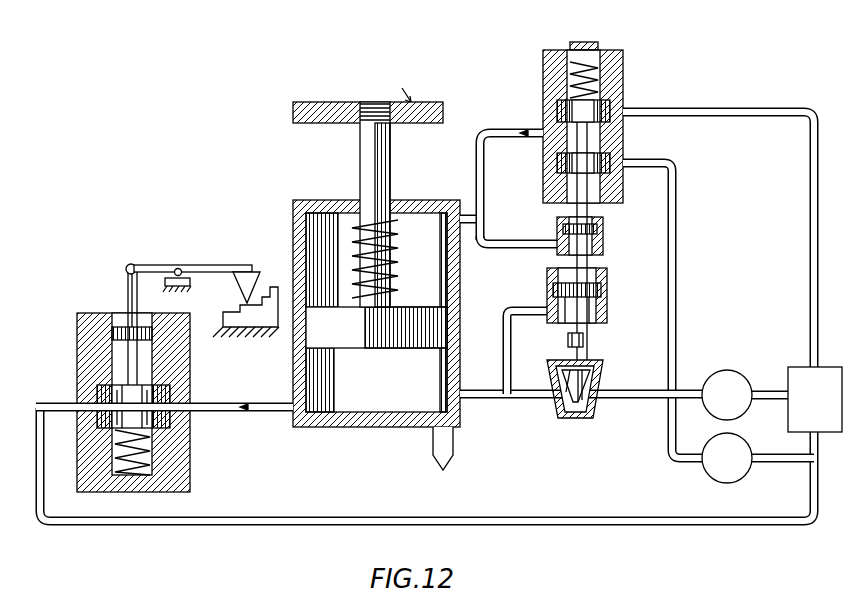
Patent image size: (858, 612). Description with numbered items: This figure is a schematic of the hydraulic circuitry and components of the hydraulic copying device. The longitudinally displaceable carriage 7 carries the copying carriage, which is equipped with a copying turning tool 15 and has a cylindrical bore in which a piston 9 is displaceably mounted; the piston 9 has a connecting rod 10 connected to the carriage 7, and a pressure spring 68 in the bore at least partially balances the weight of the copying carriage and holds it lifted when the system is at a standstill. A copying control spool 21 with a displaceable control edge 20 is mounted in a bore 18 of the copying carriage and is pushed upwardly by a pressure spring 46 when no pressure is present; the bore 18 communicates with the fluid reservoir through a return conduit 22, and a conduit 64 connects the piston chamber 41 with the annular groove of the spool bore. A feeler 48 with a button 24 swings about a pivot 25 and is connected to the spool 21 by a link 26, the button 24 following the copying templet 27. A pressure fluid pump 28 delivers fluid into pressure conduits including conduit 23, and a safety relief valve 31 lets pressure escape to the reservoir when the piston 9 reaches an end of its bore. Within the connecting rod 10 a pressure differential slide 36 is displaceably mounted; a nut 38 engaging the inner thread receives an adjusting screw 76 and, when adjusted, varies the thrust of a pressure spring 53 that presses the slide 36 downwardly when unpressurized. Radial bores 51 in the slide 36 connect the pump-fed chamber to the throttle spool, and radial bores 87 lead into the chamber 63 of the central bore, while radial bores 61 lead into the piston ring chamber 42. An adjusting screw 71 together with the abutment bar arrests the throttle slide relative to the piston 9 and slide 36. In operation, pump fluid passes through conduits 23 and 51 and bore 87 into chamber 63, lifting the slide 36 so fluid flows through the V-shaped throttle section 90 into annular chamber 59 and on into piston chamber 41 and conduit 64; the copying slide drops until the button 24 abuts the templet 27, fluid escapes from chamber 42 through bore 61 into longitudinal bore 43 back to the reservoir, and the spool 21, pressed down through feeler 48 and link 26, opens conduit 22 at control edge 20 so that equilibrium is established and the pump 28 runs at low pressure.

The carriage 7 is at (338, 108).
The piston 9 is at (300, 346).
The connecting rod 10 is at (362, 153).
The copying turning tool 15 is at (455, 456).
The bore 18 is at (125, 312).
The control edge 20 is at (112, 372).
The copying control spool 21 is at (160, 400).
The return conduit 22 is at (333, 517).
The pressure conduit 23 is at (674, 219).
The button 24 is at (252, 276).
The pivot 25 is at (181, 269).
The link 26 is at (160, 266).
The copying templet 27 is at (222, 326).
The pressure fluid pump 28 is at (731, 372).
The safety relief valve 31 is at (749, 472).
The pressure differential slide 36 is at (623, 100).
The nut 38 is at (597, 22).
The piston chamber 41 is at (372, 425).
The piston ring chamber 42 is at (431, 215).
The longitudinal bore 43 is at (660, 108).
The pressure spring 46 is at (152, 458).
The feeler 48 is at (127, 266).
The radial bores 51 is at (640, 399).
The pressure spring 53 is at (612, 80).
The annular chamber 59 is at (607, 308).
The radial bores 61 is at (520, 128).
The chamber 63 is at (605, 240).
The conduit 64 is at (250, 412).
The pressure spring 68 is at (352, 230).
The adjusting screw 71 is at (606, 340).
The adjusting screw 76 is at (584, 340).
The radial bores 87 is at (526, 247).
The V-shaped throttle section 90 is at (590, 402).